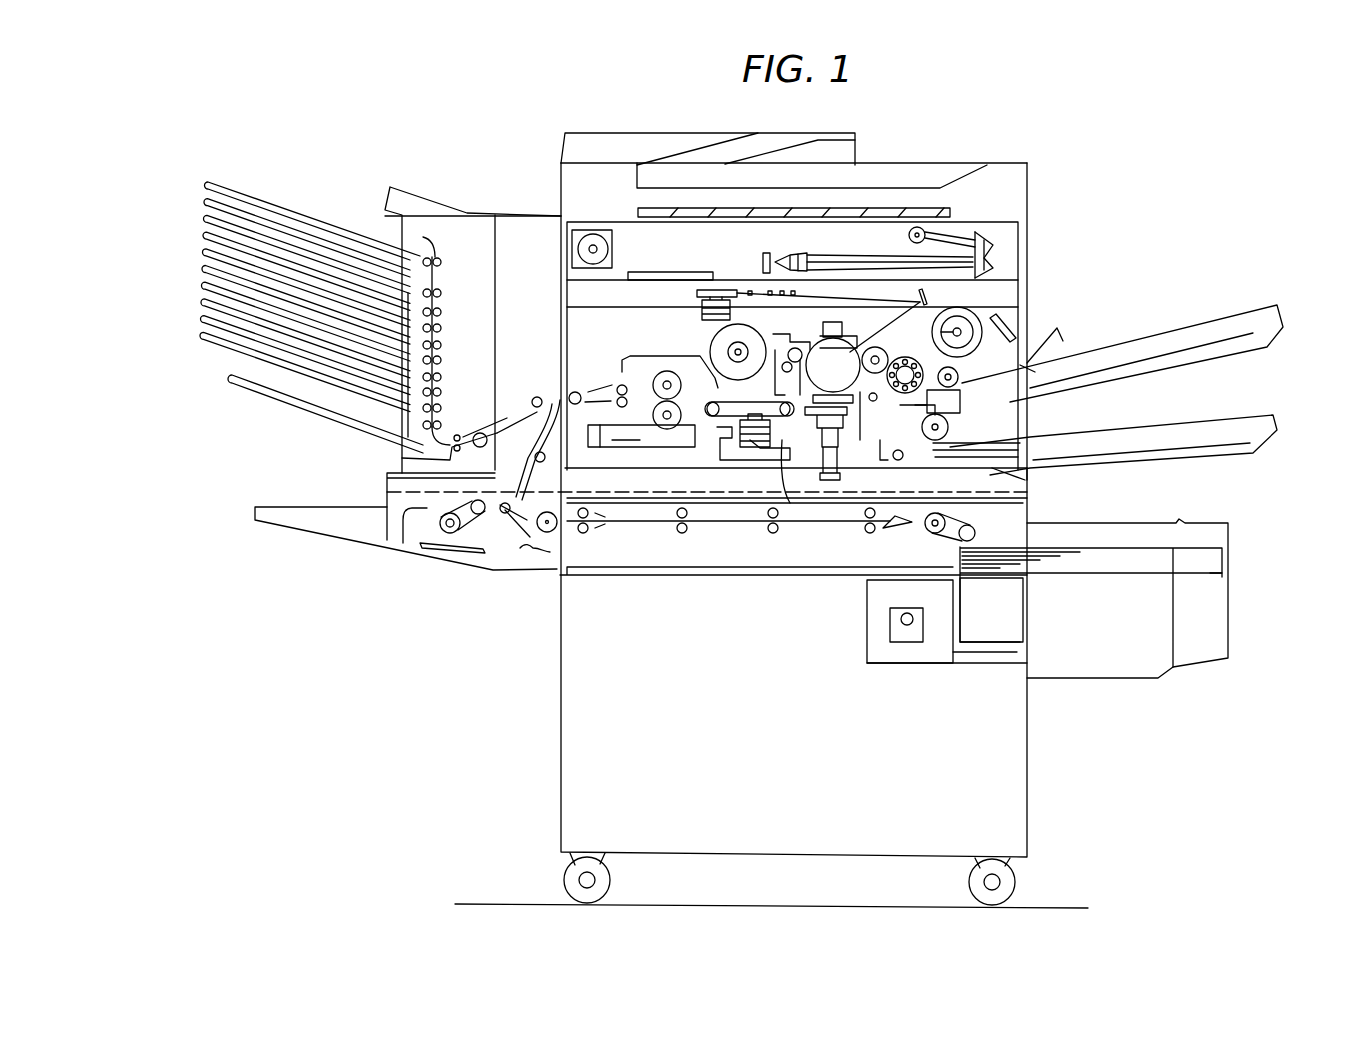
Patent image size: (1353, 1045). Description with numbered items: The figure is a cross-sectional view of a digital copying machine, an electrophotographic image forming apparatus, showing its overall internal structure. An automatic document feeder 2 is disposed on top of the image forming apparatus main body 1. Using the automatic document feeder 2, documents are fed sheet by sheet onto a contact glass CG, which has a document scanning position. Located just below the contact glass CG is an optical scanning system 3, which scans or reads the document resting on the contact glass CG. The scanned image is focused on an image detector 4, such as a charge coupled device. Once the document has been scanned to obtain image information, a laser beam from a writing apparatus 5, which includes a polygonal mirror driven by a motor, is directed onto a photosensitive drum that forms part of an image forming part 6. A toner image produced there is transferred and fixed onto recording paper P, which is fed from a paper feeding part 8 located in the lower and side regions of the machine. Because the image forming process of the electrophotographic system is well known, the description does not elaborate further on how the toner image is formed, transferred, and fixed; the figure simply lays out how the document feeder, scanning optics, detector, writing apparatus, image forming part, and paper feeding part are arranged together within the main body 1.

The image forming apparatus main body 1 is at (1028, 280).
The automatic document feeder 2 is at (1001, 165).
The optical scanning system 3 is at (1002, 255).
The image detector 4 is at (761, 261).
The writing apparatus 5 is at (697, 293).
The image forming part 6 is at (806, 452).
The paper feeding part 8 is at (1261, 368).
The contact glass CG is at (890, 214).
The recording paper P is at (1220, 575).